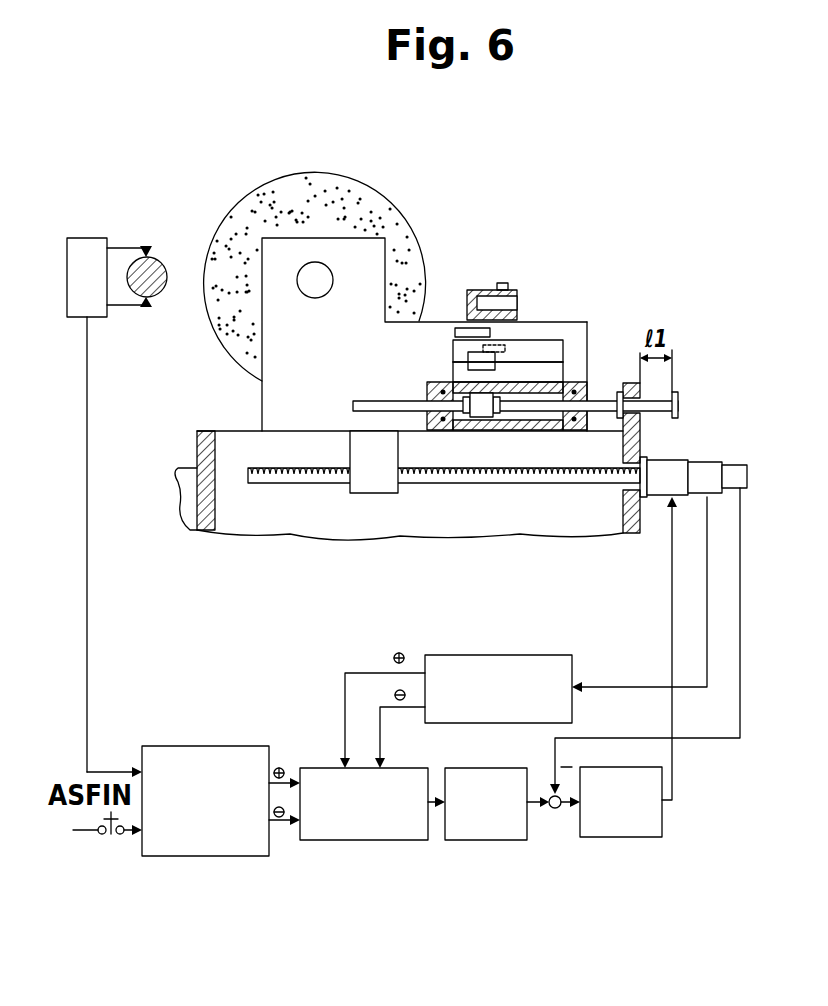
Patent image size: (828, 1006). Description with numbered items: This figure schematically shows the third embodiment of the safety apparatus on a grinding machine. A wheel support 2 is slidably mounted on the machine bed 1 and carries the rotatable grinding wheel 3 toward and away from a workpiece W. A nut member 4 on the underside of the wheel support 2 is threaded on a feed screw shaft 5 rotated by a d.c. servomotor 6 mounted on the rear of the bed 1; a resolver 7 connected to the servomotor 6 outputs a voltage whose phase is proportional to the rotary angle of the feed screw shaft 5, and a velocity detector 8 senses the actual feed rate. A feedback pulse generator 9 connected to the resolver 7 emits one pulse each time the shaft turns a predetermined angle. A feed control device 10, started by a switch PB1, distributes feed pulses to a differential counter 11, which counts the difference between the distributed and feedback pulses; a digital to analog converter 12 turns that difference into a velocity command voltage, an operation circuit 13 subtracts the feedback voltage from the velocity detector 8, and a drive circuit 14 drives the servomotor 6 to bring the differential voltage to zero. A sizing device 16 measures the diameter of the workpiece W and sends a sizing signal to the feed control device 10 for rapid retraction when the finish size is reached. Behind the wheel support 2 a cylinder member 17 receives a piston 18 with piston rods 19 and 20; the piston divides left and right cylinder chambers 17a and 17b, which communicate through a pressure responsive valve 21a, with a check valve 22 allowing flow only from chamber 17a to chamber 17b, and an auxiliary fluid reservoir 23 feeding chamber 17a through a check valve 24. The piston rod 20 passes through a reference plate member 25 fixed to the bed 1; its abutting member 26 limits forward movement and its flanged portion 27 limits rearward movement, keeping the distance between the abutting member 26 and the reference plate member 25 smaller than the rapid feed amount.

The machine bed 1 is at (293, 535).
The wheel support 2 is at (262, 393).
The grinding wheel 3 is at (336, 184).
The nut member 4 is at (370, 485).
The feed screw shaft 5 is at (519, 484).
The d.c. servomotor 6 is at (662, 464).
The resolver 7 is at (703, 464).
The velocity detector 8 is at (738, 465).
The feedback pulse generator 9 is at (558, 655).
The feed control device 10 is at (216, 857).
The differential counter 11 is at (366, 842).
The digital to analog converter 12 is at (481, 842).
The operation circuit 13 is at (556, 810).
The drive circuit 14 is at (628, 838).
The sizing device 16 is at (92, 238).
The cylinder member 17 is at (526, 430).
The left cylinder chamber 17a is at (452, 431).
The right cylinder chamber 17b is at (565, 430).
The piston 18 is at (481, 418).
The piston rod 19 is at (382, 401).
The piston rod 20 is at (591, 401).
The pressure responsive valve 21a is at (500, 365).
The check valve 22 is at (537, 340).
The auxiliary fluid reservoir 23 is at (485, 290).
The check valve 24 is at (467, 328).
The reference plate member 25 is at (620, 383).
The abutting member 26 is at (680, 400).
The flanged portion 27 is at (621, 387).
The workpiece W is at (165, 259).
The switch PB1 is at (110, 838).